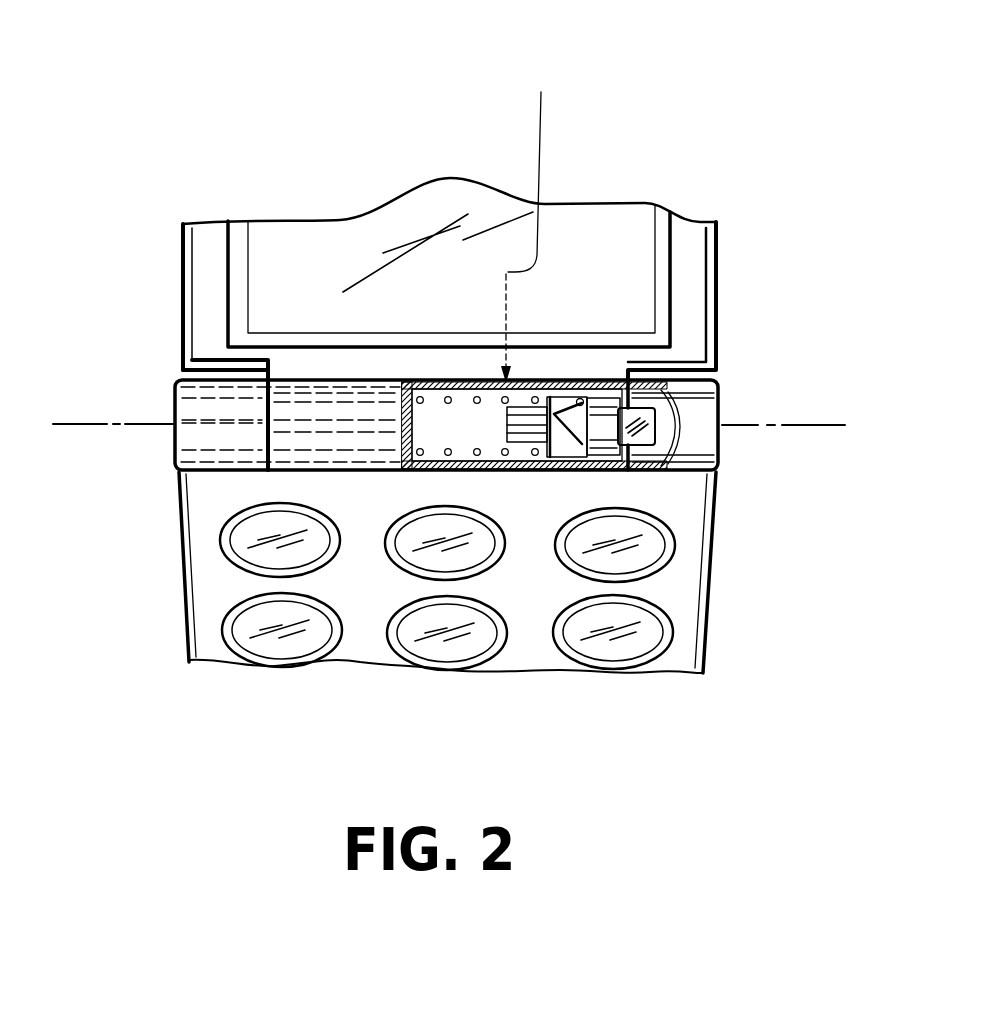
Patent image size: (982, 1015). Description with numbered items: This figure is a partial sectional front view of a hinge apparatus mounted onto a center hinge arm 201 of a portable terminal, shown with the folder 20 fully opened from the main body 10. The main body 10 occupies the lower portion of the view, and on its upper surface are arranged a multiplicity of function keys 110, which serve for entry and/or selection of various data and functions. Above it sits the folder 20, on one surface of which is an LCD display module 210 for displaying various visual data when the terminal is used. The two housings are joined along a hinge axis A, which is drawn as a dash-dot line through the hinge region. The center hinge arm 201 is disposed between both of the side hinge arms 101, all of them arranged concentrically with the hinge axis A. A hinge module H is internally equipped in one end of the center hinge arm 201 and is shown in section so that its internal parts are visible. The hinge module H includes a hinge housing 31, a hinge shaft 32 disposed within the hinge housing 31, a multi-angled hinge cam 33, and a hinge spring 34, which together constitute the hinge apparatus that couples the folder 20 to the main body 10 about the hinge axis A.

The main body 10 is at (720, 564).
The folder 20 is at (719, 272).
The hinge housing 31 is at (527, 473).
The hinge shaft 32 is at (593, 398).
The multi-angled hinge cam 33 is at (550, 398).
The hinge spring 34 is at (445, 400).
The side hinge arms 101 is at (698, 412).
The function keys 110 is at (633, 640).
The center hinge arm 201 is at (312, 405).
The LCD display module 210 is at (395, 238).
The hinge module H is at (524, 221).
The hinge axis A is at (792, 427).